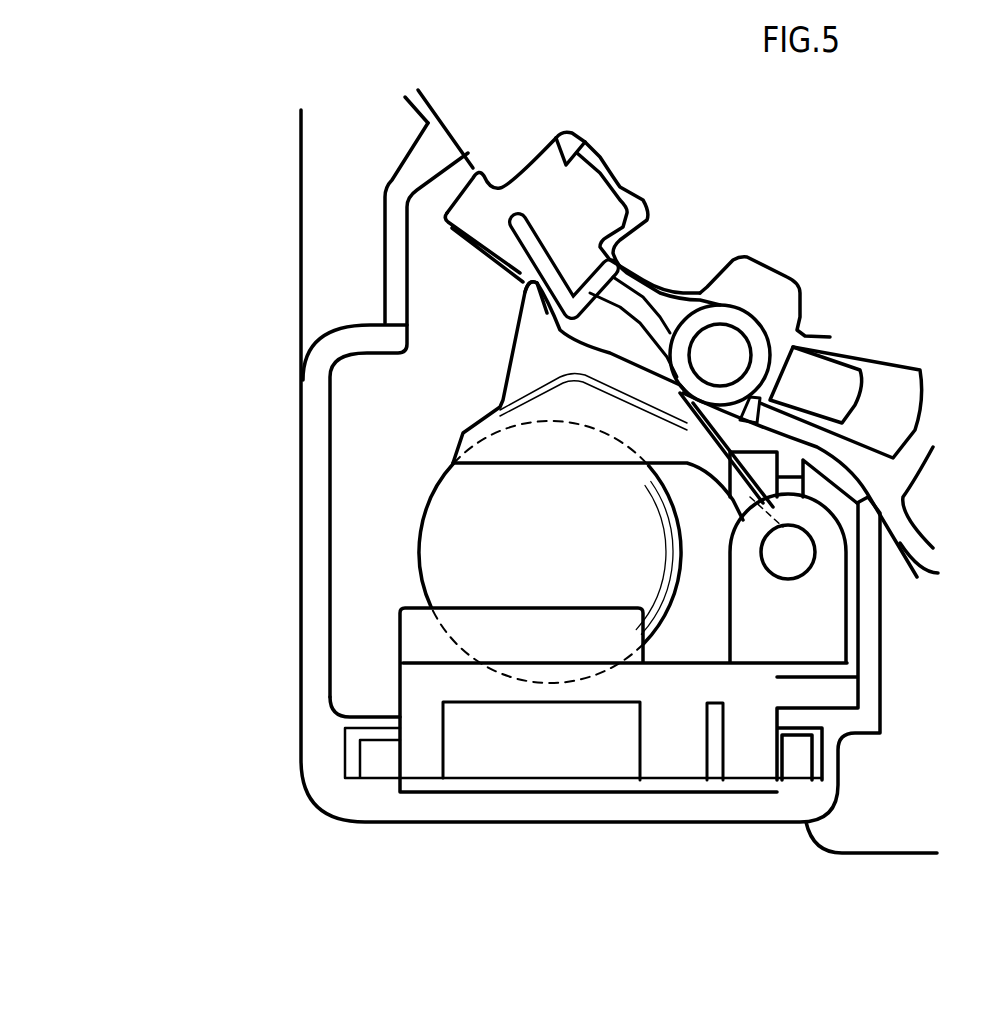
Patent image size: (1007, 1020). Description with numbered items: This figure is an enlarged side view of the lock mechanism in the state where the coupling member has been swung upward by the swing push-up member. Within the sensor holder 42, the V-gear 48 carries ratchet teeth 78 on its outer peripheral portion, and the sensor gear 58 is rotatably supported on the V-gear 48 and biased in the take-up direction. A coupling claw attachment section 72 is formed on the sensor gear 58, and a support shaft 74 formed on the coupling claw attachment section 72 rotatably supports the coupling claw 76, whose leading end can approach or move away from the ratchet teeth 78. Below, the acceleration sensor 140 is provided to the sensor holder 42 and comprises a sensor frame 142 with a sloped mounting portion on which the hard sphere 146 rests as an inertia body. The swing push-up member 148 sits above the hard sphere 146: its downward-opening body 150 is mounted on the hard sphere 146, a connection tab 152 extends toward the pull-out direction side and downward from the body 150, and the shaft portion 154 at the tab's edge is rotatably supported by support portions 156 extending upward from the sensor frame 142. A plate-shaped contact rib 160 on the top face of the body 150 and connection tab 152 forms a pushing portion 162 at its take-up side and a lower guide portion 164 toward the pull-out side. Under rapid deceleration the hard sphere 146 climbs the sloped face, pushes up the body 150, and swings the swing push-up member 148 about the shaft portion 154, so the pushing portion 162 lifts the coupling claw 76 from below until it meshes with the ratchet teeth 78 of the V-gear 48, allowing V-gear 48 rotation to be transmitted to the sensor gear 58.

The sensor holder 42 is at (312, 570).
The sensor gear 58 is at (467, 110).
The coupling claw attachment section 72 is at (489, 226).
The support shaft 74 is at (728, 340).
The coupling claw 76 is at (623, 197).
The ratchet teeth 78 is at (567, 160).
The V-gear 48 is at (622, 108).
The acceleration sensor 140 is at (364, 486).
The sensor frame 142 is at (400, 677).
The hard sphere 146 is at (437, 547).
The swing push-up member 148 is at (438, 430).
The body 150 is at (533, 452).
The connection tab 152 is at (730, 505).
The shaft portion 154 is at (787, 570).
The support portions 156 is at (828, 630).
The contact rib 160 is at (499, 368).
The pushing portion 162 is at (530, 327).
The guide portion 164 is at (773, 363).